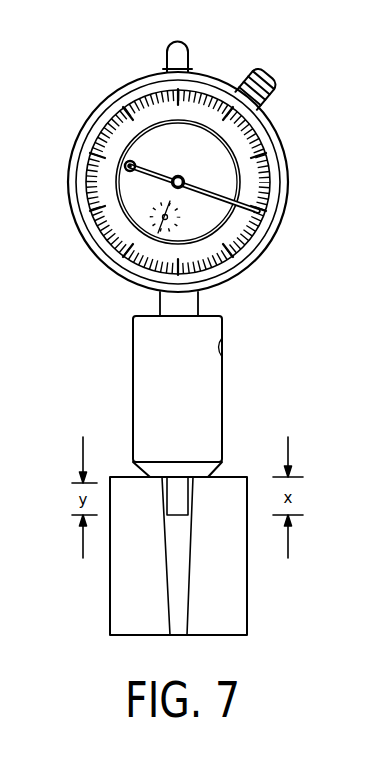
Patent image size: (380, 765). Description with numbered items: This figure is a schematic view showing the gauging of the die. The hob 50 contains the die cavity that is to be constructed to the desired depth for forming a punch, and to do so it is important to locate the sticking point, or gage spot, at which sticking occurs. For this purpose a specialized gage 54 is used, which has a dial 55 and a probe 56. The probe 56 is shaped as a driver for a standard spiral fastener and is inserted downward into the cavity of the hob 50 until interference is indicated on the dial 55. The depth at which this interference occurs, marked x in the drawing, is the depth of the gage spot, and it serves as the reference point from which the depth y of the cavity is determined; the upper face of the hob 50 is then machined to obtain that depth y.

The hob 50 is at (110, 573).
The gage 54 is at (100, 315).
The dial 55 is at (288, 186).
The probe 56 is at (182, 505).